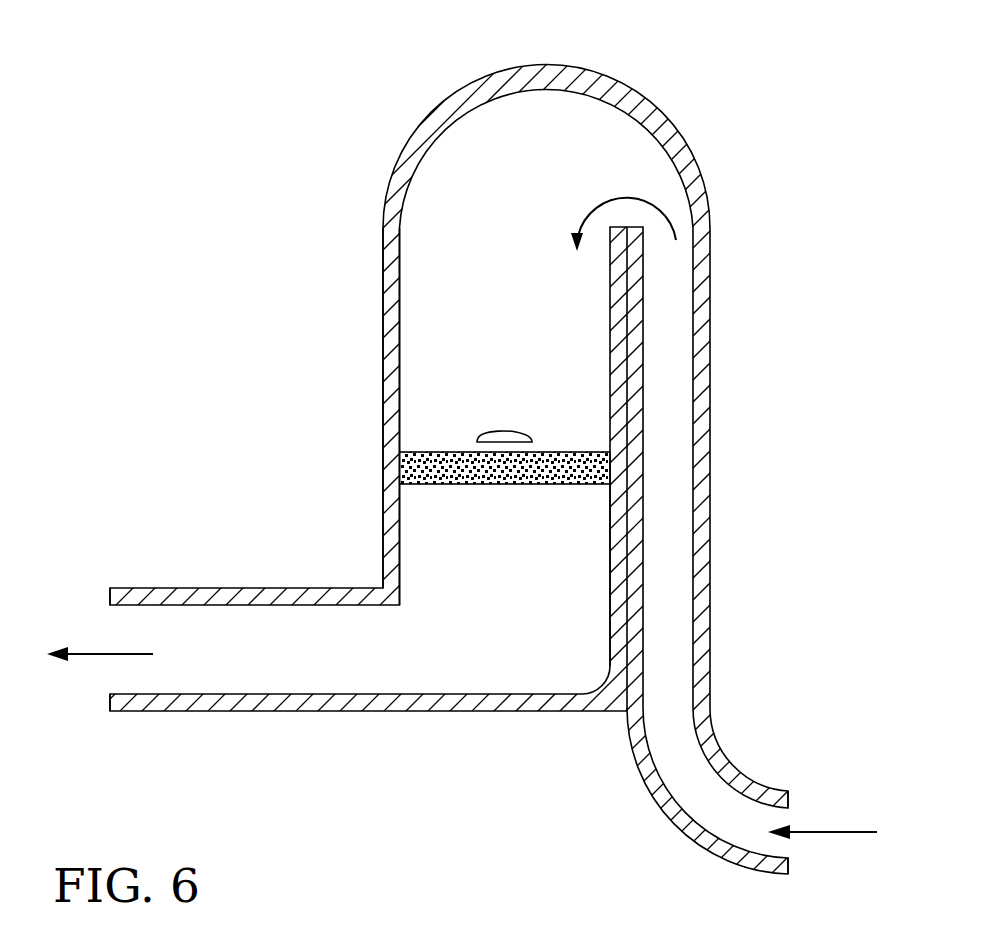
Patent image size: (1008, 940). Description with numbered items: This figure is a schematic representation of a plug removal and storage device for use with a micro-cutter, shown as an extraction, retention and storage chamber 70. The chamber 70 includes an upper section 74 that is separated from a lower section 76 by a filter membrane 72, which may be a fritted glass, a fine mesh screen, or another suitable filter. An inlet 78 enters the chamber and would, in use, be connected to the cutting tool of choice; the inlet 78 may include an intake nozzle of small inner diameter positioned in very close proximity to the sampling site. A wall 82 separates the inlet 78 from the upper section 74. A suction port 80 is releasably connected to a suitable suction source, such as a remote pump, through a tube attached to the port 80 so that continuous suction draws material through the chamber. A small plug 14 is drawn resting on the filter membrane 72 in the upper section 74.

The liquid sample droplet 14 is at (488, 434).
The domed housing 70 is at (650, 112).
The porous membrane 72 is at (400, 463).
The upper chamber 74 is at (430, 238).
The lower chamber 76 is at (425, 533).
The inlet 78 is at (777, 818).
The outlet 80 is at (143, 627).
The inner tube 82 is at (633, 317).